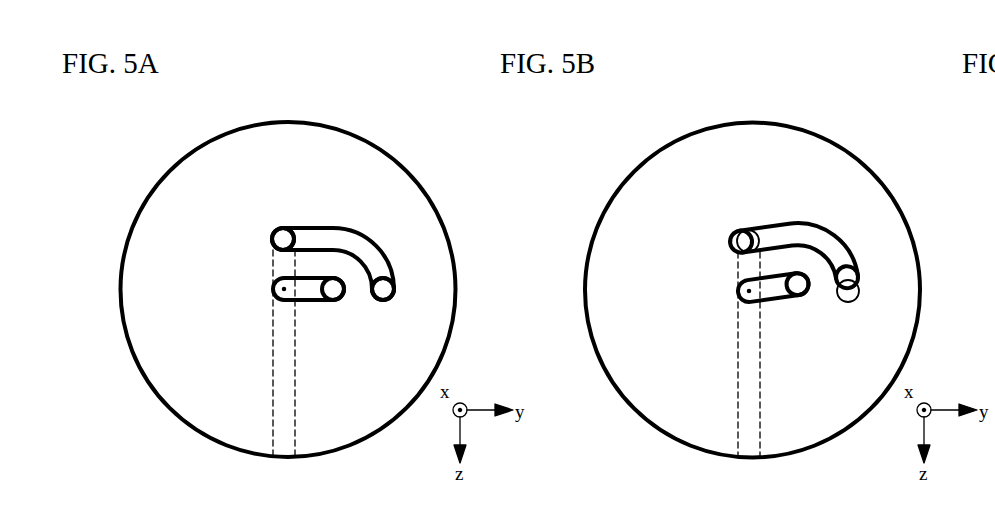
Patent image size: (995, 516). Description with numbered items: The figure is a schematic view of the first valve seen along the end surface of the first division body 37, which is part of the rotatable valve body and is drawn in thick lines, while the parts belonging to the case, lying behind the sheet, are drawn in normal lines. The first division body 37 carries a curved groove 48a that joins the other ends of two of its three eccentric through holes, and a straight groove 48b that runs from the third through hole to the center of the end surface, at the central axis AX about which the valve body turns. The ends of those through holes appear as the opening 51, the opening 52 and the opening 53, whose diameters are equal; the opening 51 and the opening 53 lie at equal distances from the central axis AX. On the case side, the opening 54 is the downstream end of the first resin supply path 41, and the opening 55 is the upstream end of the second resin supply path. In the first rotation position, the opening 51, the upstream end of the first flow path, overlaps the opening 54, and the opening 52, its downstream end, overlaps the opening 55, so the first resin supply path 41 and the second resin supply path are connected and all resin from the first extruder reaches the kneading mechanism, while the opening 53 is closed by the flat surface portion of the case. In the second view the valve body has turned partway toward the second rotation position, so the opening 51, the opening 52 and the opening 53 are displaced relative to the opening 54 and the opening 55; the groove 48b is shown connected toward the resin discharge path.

In FIG. 5A, the first division body 37 is at (453, 116).
In FIG. 5B, the first division body 37 is at (907, 119).
In FIG. 5A, the first resin supply path 41 is at (268, 410).
In FIG. 5B, the first resin supply path 41 is at (731, 410).
In FIG. 5A, the groove 48a is at (347, 241).
In FIG. 5B, the groove 48a is at (827, 240).
In FIG. 5A, the groove 48b is at (318, 302).
In FIG. 5B, the groove 48b is at (783, 300).
In FIG. 5A, the opening 51 is at (282, 230).
In FIG. 5B, the opening 51 is at (735, 233).
In FIG. 5A, the opening 54 is at (283, 239).
In FIG. 5B, the opening 54 is at (757, 230).
In FIG. 5A, the opening 52 is at (383, 288).
In FIG. 5B, the opening 52 is at (847, 277).
In FIG. 5A, the opening 55 is at (462, 286).
In FIG. 5B, the opening 55 is at (858, 292).
In FIG. 5A, the opening 53 is at (335, 302).
In FIG. 5B, the opening 53 is at (807, 297).
In FIG. 5A, the central axis AX is at (284, 289).
In FIG. 5B, the central axis AX is at (749, 291).